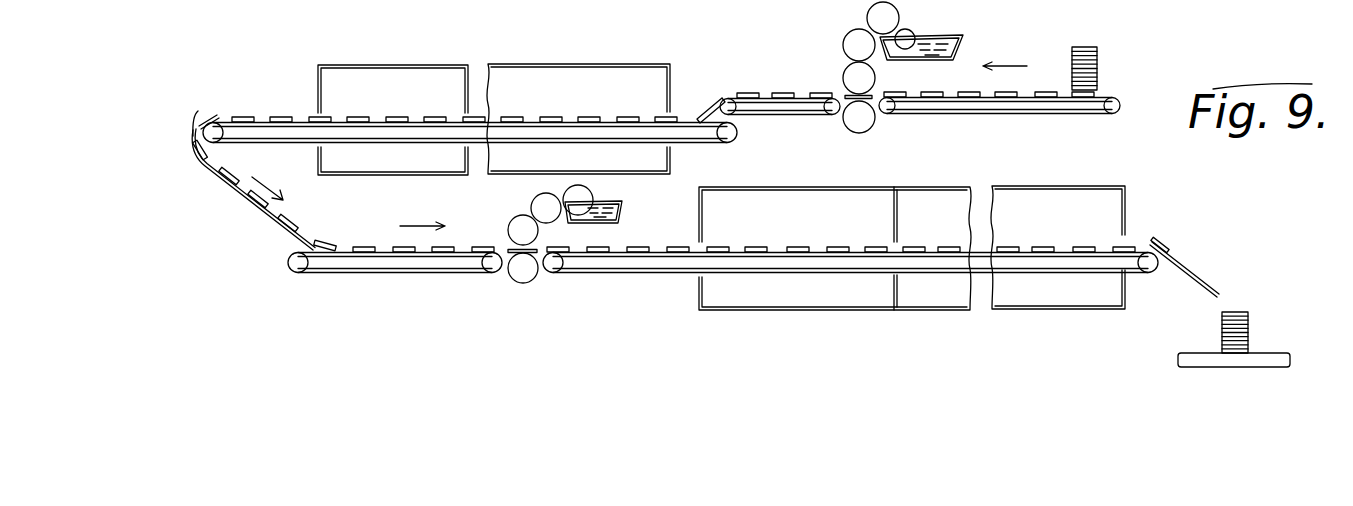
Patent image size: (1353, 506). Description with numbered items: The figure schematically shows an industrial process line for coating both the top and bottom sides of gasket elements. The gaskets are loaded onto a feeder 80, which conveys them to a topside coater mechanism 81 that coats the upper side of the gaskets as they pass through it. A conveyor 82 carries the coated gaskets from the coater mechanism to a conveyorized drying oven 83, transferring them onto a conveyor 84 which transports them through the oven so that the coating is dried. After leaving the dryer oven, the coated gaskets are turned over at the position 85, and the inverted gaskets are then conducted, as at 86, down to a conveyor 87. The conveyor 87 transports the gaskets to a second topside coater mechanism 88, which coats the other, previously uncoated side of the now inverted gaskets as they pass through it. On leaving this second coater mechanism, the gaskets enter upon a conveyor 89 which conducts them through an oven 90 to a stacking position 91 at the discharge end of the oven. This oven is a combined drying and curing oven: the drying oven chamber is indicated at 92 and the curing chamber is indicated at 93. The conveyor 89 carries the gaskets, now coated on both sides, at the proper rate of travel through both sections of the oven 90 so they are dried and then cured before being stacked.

The feeder 80 is at (1042, 114).
The topside coater mechanism 81 is at (855, 19).
The conveyor 82 is at (792, 118).
The conveyorized drying oven 83 is at (441, 64).
The conveyor 84 is at (560, 143).
The position 85 is at (191, 126).
The conducting path 86 is at (248, 197).
The conveyor 87 is at (382, 276).
The second topside coater mechanism 88 is at (506, 202).
The conveyor 89 is at (645, 274).
The oven 90 is at (912, 270).
The stacking position 91 is at (1270, 352).
The drying oven chamber 92 is at (800, 296).
The curing chamber 93 is at (1053, 296).